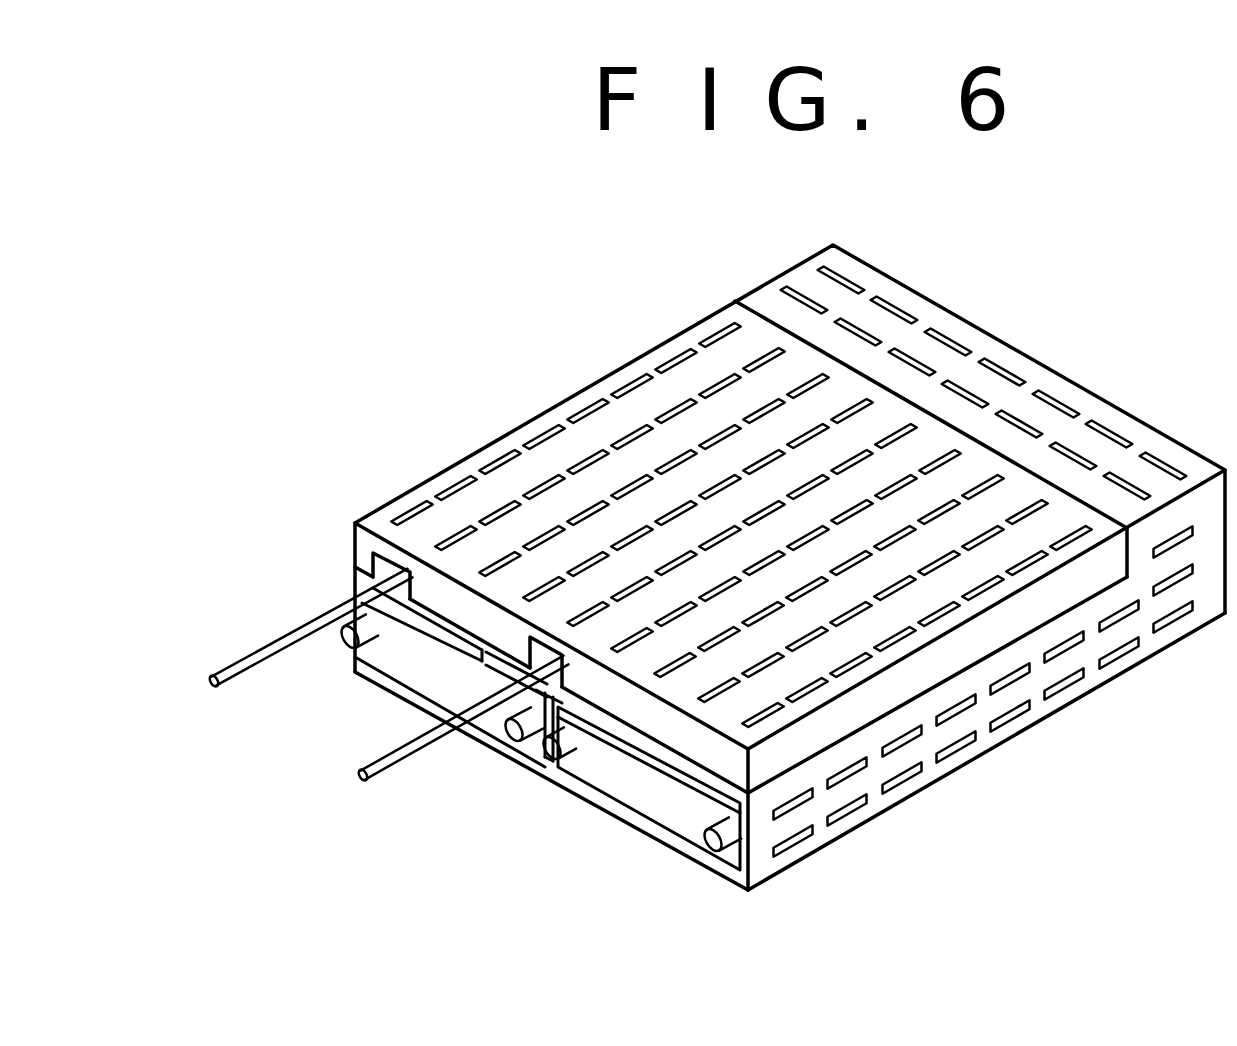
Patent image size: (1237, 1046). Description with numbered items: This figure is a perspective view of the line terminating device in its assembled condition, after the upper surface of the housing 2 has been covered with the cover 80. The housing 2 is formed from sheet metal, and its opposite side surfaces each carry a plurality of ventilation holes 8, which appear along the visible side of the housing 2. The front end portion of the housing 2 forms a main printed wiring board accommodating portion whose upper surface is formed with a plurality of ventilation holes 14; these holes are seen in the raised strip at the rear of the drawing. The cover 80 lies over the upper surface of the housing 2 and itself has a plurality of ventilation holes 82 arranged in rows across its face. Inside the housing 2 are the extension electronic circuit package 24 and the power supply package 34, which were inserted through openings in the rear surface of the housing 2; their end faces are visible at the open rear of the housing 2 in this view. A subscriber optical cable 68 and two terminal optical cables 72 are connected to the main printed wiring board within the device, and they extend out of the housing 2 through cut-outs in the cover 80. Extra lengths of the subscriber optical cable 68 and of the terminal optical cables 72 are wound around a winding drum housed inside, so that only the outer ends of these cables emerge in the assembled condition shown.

The housing 2 is at (1075, 698).
The ventilation holes 8 is at (900, 742).
The ventilation holes 14 is at (947, 345).
The extension electronic circuit package 24 is at (397, 669).
The power supply package 34 is at (678, 810).
The subscriber optical cable 68 is at (392, 753).
The terminal optical cables 72 is at (290, 637).
The cover 80 is at (685, 377).
The ventilation holes 82 is at (618, 438).